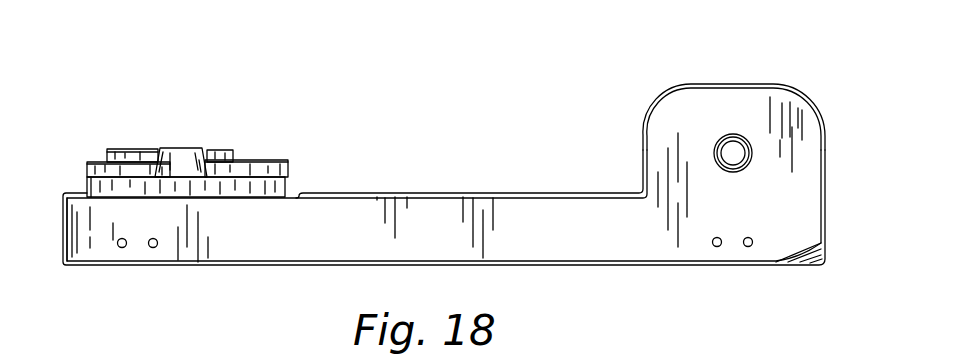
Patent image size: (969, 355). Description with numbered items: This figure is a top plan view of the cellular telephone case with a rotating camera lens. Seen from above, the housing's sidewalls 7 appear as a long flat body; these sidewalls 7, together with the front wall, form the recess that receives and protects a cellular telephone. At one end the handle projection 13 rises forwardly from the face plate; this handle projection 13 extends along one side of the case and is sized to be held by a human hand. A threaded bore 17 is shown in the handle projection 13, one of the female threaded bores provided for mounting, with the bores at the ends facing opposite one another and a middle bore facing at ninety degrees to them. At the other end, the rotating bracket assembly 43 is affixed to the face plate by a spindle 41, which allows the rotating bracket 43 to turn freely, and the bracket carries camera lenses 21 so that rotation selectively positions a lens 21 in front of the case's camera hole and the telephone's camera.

The sidewalls 7 is at (565, 245).
The handle projection 13 is at (747, 102).
The threaded bore 17 is at (728, 155).
The camera lens 21 is at (133, 157).
The spindle 41 is at (182, 157).
The rotating bracket assembly 43 is at (285, 187).